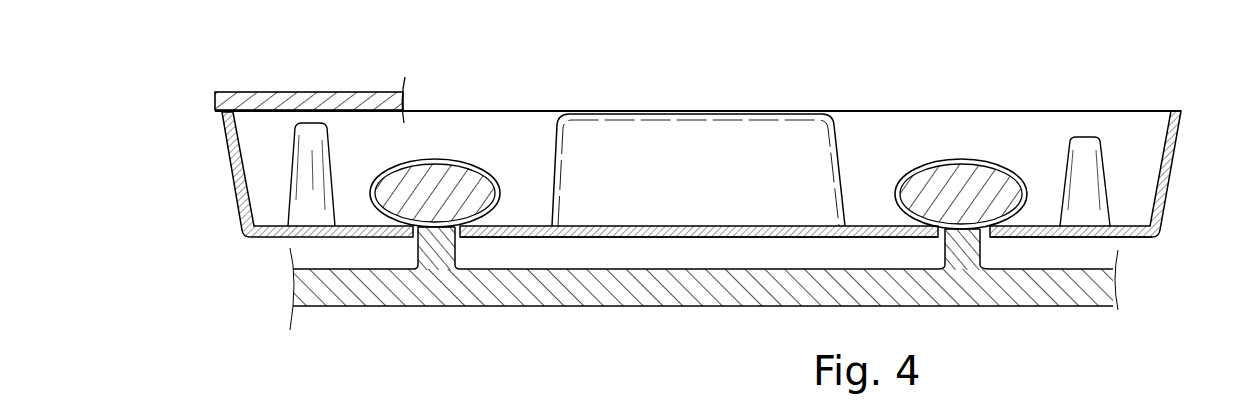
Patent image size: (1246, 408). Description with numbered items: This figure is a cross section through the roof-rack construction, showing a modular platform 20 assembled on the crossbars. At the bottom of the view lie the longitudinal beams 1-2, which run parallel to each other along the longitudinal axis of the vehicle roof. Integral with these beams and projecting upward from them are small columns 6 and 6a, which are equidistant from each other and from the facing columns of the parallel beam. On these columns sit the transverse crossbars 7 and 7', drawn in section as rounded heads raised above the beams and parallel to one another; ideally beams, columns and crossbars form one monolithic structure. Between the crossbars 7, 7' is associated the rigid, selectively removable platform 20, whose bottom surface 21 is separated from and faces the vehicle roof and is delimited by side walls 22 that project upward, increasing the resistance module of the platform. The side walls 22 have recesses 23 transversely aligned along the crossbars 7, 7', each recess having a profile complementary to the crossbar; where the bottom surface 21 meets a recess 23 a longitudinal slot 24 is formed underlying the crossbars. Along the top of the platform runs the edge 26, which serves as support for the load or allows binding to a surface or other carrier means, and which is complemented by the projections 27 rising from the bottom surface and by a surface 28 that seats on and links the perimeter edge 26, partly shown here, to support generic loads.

The longitudinal beams 1-2 is at (678, 290).
The column 6 is at (963, 253).
The column 6a is at (433, 250).
The crossbar 7 is at (435, 139).
The crossbar 7' is at (964, 140).
The platform 20 is at (239, 241).
The bottom surface 21 is at (1143, 238).
The side wall 22 is at (1168, 176).
The recess 23 is at (502, 197).
The longitudinal slot 24 is at (460, 238).
The edge 26 is at (858, 105).
The projection 27 is at (662, 138).
The surface 28 is at (257, 92).